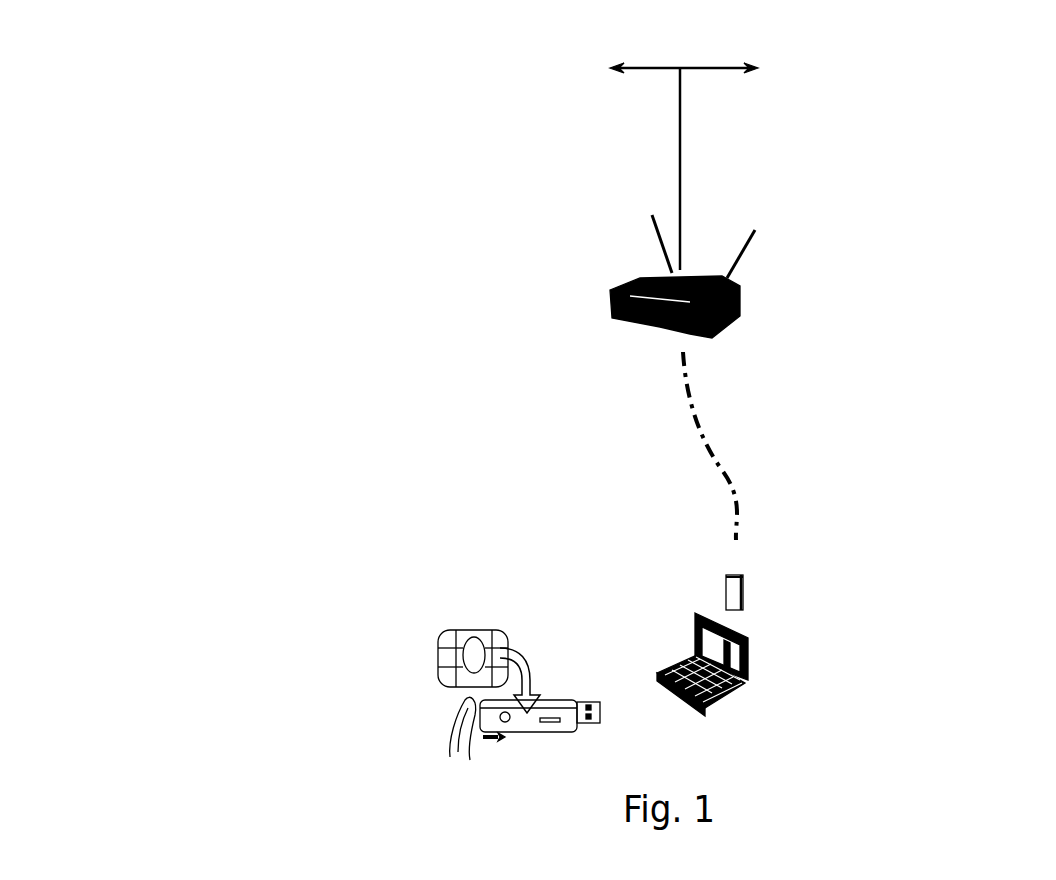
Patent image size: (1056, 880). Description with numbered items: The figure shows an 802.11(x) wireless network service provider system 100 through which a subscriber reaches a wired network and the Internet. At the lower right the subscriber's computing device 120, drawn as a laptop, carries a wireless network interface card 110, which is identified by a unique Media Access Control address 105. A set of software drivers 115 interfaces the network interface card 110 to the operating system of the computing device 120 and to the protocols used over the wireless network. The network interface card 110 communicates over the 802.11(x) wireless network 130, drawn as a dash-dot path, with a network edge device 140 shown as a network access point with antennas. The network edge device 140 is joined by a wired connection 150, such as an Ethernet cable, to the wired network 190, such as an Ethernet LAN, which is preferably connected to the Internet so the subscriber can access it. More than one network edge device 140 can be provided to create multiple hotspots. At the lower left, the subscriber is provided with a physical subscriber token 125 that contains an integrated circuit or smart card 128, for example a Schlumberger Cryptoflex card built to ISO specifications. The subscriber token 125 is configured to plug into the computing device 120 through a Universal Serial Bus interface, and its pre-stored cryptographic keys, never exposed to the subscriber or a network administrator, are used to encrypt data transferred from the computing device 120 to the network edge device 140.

The wireless network service provider system 100 is at (452, 200).
The Media Access Control (MAC) address 105 is at (740, 550).
The wireless network interface card 110 is at (765, 580).
The set of software drivers 115 is at (782, 625).
The computing device 120 is at (770, 690).
The subscriber token 125 is at (405, 720).
The smart card 128 is at (492, 633).
The 802.11(x) wireless network 130 is at (655, 390).
The network edge device 140 is at (778, 298).
The wired connection 150 is at (710, 166).
The wired network 190 is at (785, 58).